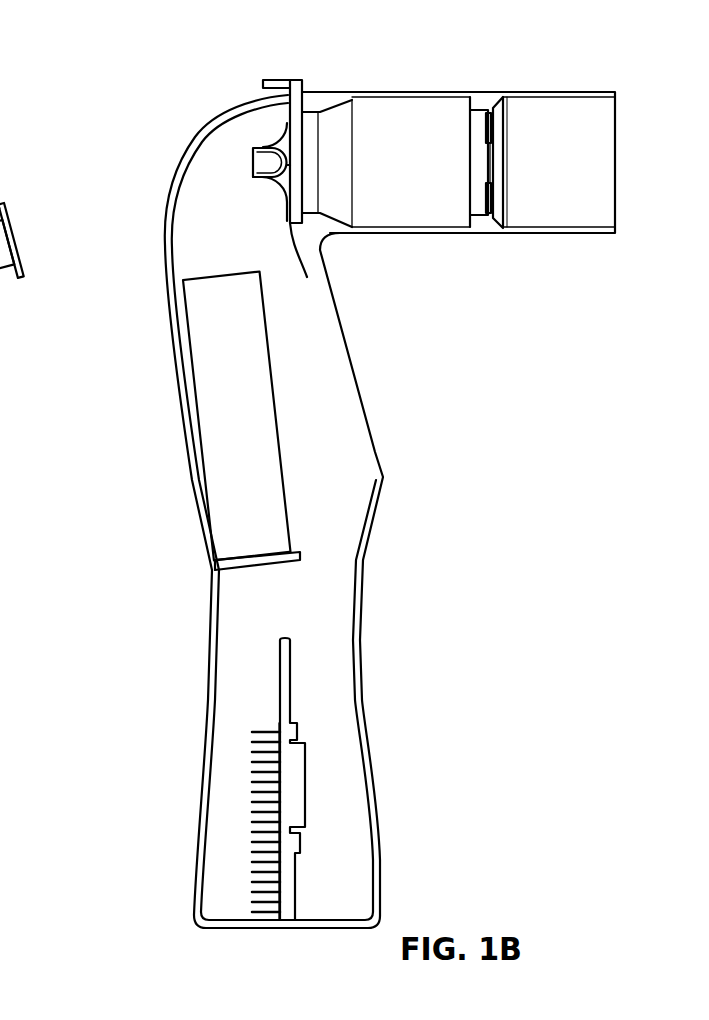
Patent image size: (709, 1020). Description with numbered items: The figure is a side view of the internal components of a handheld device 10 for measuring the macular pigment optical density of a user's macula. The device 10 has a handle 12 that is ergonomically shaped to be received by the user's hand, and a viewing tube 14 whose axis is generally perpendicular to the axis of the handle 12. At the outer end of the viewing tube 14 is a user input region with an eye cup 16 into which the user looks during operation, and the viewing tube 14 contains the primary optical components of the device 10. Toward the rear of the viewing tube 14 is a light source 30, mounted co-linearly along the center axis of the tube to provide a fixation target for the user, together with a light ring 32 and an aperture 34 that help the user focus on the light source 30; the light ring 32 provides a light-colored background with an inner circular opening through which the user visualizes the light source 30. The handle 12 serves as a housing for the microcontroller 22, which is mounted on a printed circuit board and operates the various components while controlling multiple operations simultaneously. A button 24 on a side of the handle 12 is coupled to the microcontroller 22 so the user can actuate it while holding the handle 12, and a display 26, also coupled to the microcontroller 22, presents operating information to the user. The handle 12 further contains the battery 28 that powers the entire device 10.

The handheld device 10 is at (128, 95).
The handle 12 is at (363, 607).
The viewing tube 14 is at (513, 235).
The eye cup 16 is at (615, 208).
The microcontroller 22 is at (262, 780).
The button 24 is at (373, 433).
The display 26 is at (337, 313).
The battery 28 is at (223, 410).
The light source 30 is at (253, 148).
The light ring 32 is at (488, 138).
The aperture 34 is at (287, 123).